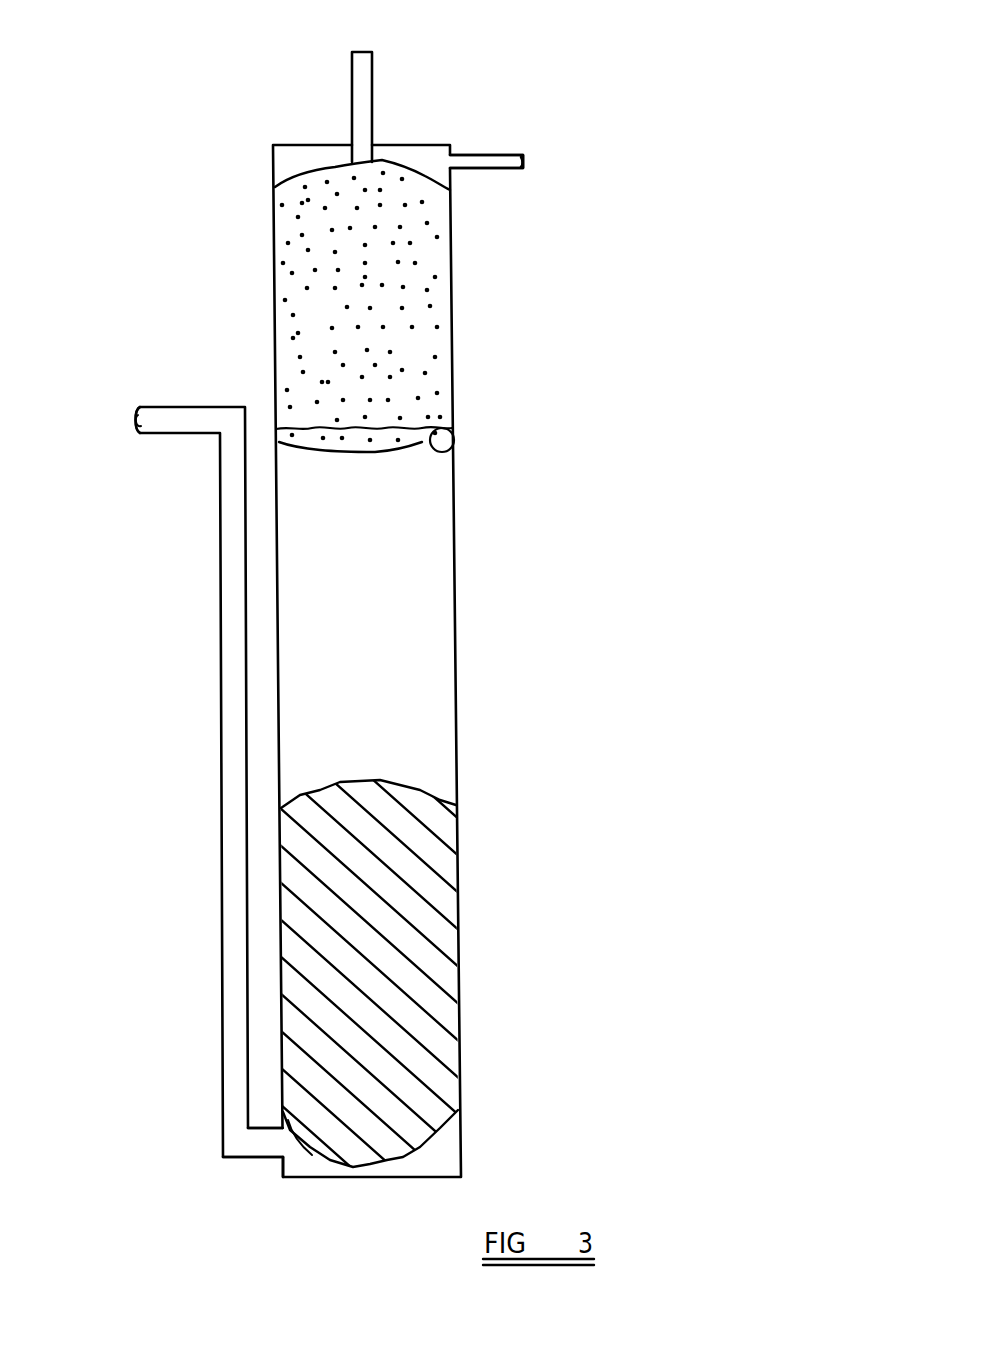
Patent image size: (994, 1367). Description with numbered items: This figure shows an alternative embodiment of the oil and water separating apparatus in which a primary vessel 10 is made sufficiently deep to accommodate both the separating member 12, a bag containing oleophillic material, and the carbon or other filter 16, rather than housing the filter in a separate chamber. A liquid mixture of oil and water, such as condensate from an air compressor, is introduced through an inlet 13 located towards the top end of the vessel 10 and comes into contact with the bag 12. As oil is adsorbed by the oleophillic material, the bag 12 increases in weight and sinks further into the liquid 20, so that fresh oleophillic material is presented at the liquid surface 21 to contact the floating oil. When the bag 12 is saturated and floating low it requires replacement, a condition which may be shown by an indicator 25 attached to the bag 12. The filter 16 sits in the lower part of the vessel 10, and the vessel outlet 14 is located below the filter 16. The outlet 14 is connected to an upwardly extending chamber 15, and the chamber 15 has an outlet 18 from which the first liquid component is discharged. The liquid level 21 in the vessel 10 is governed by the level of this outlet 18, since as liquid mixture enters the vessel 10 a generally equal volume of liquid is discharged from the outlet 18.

The primary vessel 10 is at (457, 134).
The separating member 12 is at (397, 353).
The inlet 13 is at (519, 163).
The outlet 14 is at (254, 1158).
The chamber 15 is at (221, 710).
The filter 16 is at (402, 942).
The outlet 18 is at (150, 425).
The liquid 20 is at (400, 610).
The liquid surface 21 is at (440, 446).
The indicator 25 is at (372, 73).